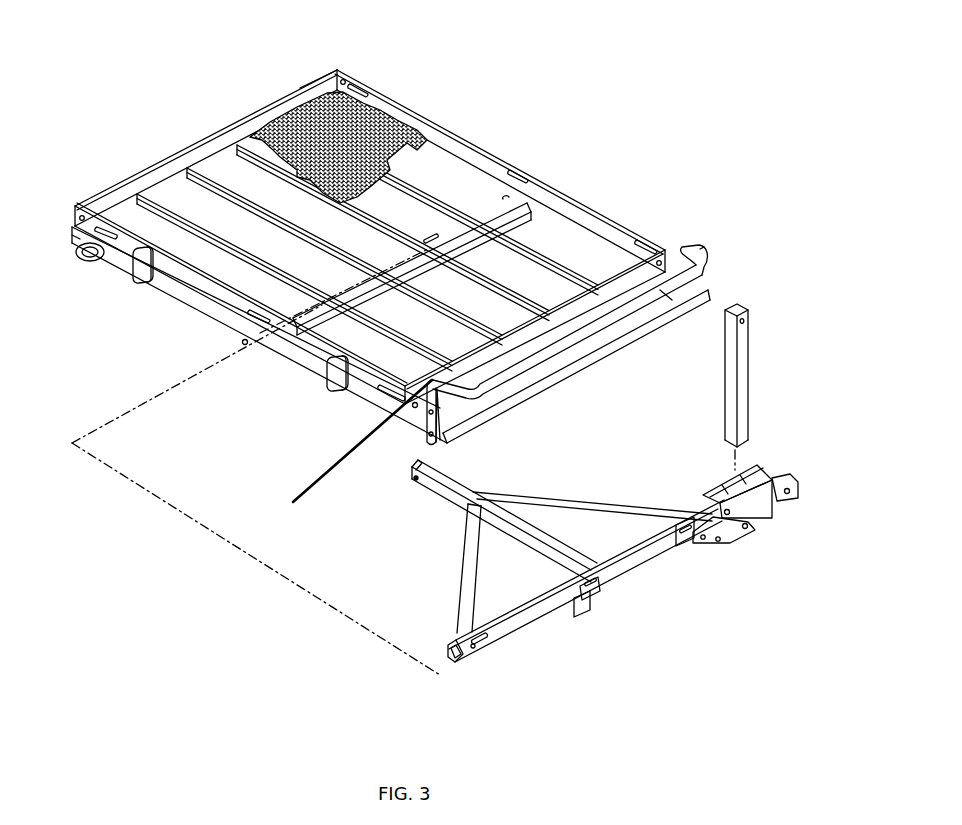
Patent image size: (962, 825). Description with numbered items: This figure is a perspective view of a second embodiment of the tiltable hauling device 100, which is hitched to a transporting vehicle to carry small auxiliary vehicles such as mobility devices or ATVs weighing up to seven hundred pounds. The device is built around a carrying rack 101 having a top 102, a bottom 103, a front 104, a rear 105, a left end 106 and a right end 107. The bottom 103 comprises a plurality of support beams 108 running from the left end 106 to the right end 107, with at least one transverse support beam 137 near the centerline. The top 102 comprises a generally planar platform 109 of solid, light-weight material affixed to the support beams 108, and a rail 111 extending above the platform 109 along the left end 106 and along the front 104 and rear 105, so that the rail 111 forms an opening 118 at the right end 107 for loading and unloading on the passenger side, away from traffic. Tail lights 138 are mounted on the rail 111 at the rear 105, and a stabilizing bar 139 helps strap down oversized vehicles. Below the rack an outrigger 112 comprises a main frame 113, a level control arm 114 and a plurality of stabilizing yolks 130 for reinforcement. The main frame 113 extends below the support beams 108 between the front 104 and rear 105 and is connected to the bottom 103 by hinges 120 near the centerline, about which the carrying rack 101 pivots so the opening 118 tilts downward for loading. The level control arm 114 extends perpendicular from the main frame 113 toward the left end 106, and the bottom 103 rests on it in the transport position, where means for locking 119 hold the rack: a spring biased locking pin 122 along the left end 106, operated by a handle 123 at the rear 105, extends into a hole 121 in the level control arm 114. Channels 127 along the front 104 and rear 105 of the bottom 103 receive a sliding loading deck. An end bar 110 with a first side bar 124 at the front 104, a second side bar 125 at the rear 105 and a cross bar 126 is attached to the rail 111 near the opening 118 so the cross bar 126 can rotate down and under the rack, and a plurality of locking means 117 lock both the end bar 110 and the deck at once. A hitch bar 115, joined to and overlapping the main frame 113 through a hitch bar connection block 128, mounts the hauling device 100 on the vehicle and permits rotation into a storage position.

The tiltable hauling device 100 is at (64, 580).
The carrying rack 101 is at (389, 27).
The top 102 is at (549, 231).
The bottom 103 is at (306, 404).
The front 104 is at (613, 226).
The rear 105 is at (208, 323).
The left end 106 is at (220, 129).
The right end 107 is at (524, 374).
The support beams 108 is at (500, 300).
The platform 109 is at (374, 112).
The end bar 110 is at (700, 243).
The rail 111 is at (308, 82).
The outrigger 112 is at (433, 583).
The main frame 113 is at (520, 613).
The level control arm 114 is at (449, 482).
The hitch bar 115 is at (800, 488).
The locking means 117 is at (668, 296).
The opening 118 is at (670, 295).
The means for locking 119 is at (55, 179).
The hinges 120 is at (437, 230).
The hole 121 is at (414, 478).
The locking pin 122 is at (140, 212).
The handle 123 is at (93, 260).
The first side bar 124 is at (675, 242).
The second side bar 125 is at (350, 453).
The cross bar 126 is at (508, 368).
The channels 127 is at (363, 398).
The hitch bar connection block 128 is at (758, 468).
The stabilizing yolks 130 is at (556, 505).
The transverse support beam 137 is at (381, 291).
The tail lights 138 is at (323, 387).
The stabilizing bar 139 is at (752, 376).